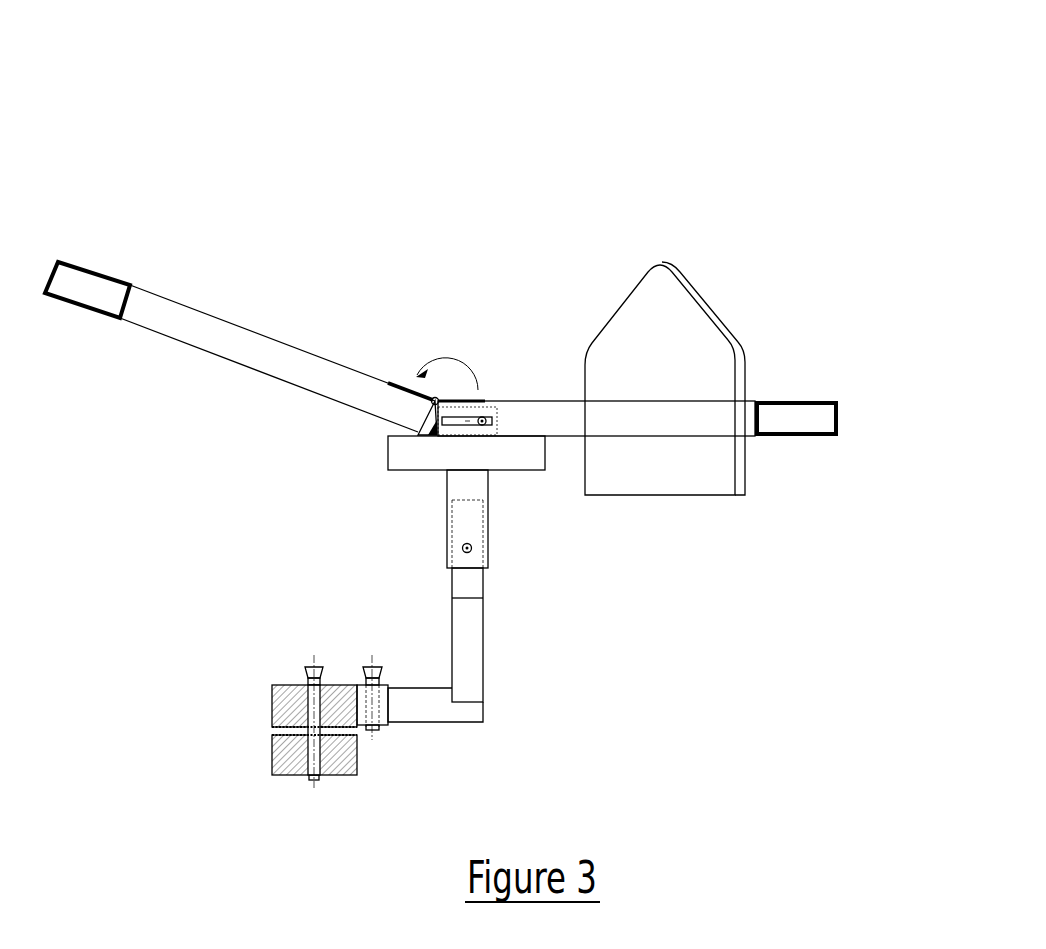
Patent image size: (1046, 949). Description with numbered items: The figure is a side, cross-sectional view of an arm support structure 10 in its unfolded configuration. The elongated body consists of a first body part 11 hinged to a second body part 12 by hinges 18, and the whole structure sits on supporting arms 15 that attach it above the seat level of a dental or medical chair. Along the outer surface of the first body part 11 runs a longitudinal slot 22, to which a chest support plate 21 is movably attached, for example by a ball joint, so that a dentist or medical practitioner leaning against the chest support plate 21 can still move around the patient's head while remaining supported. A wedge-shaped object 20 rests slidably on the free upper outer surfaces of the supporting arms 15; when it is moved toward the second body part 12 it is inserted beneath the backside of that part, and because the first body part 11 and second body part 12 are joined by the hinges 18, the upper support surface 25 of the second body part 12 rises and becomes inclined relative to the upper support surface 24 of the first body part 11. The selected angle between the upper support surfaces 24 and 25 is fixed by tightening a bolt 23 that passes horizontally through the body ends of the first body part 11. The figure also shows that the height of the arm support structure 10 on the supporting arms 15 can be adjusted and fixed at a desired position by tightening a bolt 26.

The arm support structure 10 is at (560, 142).
The first body part 11 is at (679, 420).
The second body part 12 is at (163, 319).
The supporting arms 15 is at (468, 468).
The hinges 18 is at (435, 401).
The wedge-shaped object 20 is at (430, 433).
The chest support plate 21 is at (667, 340).
The longitudinal slot 22 is at (835, 420).
The bolt 23 is at (482, 421).
The upper support surface 24 is at (797, 398).
The upper support surface 25 is at (97, 269).
The bolt 26 is at (473, 551).